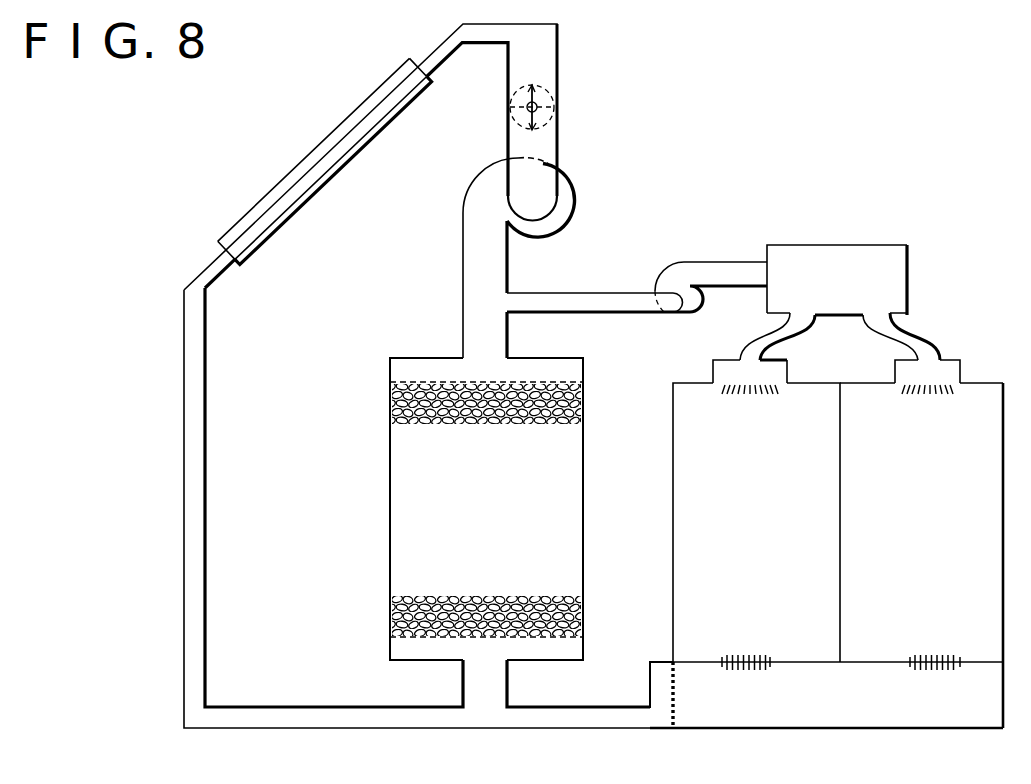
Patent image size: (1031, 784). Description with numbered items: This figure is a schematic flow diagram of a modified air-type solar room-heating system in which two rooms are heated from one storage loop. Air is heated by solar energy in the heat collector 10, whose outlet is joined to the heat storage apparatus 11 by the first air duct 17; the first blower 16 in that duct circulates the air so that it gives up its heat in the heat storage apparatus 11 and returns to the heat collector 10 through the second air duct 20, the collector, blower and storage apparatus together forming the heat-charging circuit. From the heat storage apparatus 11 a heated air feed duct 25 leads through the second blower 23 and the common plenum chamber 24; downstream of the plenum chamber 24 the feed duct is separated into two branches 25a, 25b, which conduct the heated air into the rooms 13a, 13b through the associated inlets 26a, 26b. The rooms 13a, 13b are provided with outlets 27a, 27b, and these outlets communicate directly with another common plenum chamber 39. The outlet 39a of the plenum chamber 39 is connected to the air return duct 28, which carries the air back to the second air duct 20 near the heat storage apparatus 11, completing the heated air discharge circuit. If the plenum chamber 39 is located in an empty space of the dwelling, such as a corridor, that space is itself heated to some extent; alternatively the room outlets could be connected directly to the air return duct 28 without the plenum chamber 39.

The heat collector 10 is at (320, 123).
The heat storage apparatus 11 is at (498, 517).
The room 13a is at (779, 517).
The room 13b is at (945, 517).
The first blower 16 is at (540, 196).
The first air duct 17 is at (562, 162).
The second air duct 20 is at (207, 530).
The second blower 23 is at (668, 318).
The plenum chamber 24 is at (846, 290).
The heated air feed duct 25 is at (613, 292).
The branch 25a is at (796, 327).
The branch 25b is at (941, 340).
The inlet 26a is at (755, 396).
The inlet 26b is at (928, 396).
The outlet 27a is at (746, 656).
The outlet 27b is at (926, 656).
The air return duct 28 is at (602, 705).
The common plenum chamber 39 is at (858, 710).
The outlet 39a is at (683, 693).